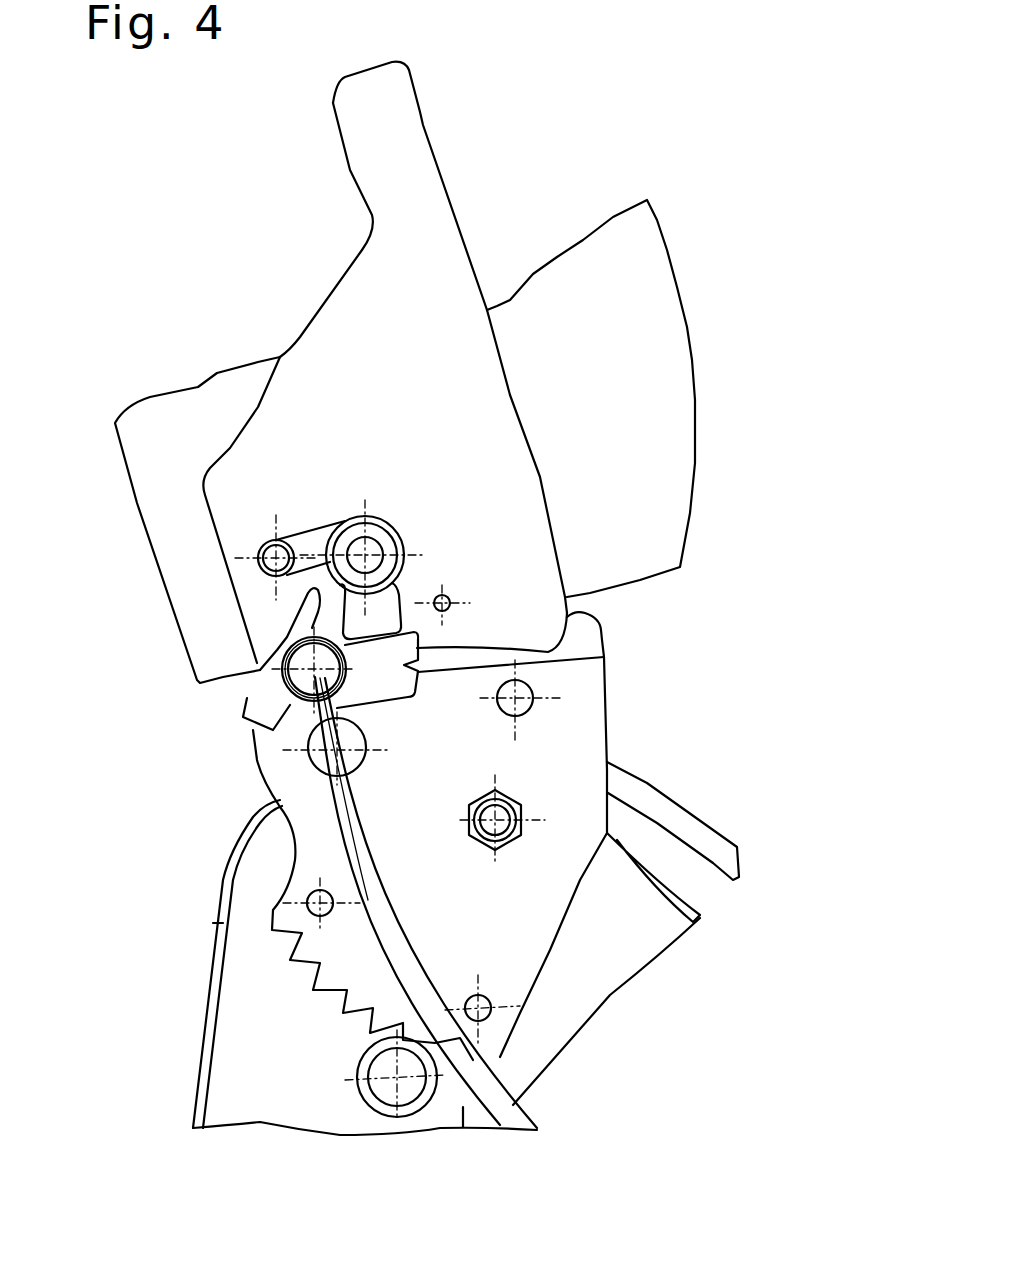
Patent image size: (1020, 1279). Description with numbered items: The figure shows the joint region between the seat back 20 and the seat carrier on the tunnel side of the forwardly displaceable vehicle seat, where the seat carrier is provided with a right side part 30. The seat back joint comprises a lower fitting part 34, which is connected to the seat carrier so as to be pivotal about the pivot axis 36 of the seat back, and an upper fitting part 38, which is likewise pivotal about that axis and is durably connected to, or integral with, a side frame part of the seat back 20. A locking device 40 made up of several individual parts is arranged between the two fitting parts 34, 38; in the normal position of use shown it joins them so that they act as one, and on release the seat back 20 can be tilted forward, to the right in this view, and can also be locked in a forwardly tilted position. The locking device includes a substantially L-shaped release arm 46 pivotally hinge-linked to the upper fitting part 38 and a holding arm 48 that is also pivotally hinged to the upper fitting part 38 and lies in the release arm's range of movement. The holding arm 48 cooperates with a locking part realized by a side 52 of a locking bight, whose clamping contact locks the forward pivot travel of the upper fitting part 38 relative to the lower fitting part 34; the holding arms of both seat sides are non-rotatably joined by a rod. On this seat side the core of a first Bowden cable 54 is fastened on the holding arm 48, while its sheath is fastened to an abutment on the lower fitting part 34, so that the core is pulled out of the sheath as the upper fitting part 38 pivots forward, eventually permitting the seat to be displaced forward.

The seat back 20 is at (647, 228).
The right side part 30 is at (645, 958).
The lower fitting part 34 is at (587, 733).
The pivot axis 36 is at (533, 797).
The upper fitting part 38 is at (510, 393).
The locking device 40 is at (155, 670).
The release arm 46 is at (327, 530).
The holding arm 48 is at (258, 672).
The side of a locking bight 52 is at (605, 657).
The first Bowden cable 54 is at (483, 1062).